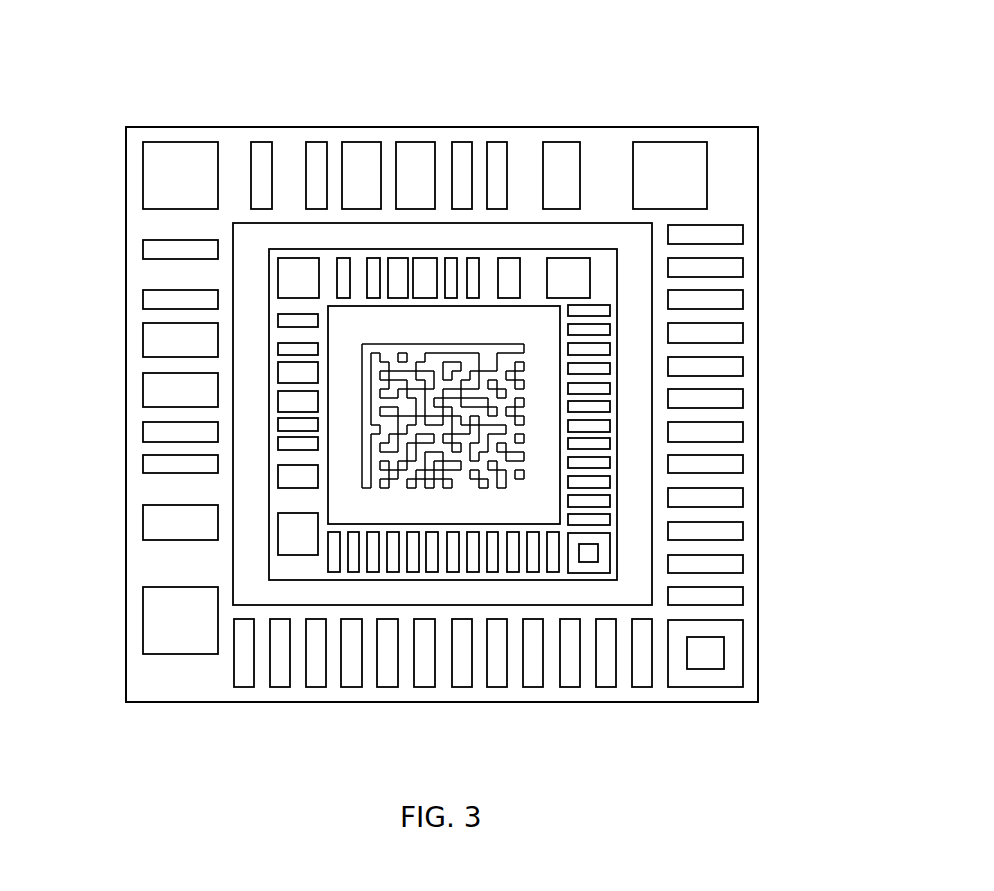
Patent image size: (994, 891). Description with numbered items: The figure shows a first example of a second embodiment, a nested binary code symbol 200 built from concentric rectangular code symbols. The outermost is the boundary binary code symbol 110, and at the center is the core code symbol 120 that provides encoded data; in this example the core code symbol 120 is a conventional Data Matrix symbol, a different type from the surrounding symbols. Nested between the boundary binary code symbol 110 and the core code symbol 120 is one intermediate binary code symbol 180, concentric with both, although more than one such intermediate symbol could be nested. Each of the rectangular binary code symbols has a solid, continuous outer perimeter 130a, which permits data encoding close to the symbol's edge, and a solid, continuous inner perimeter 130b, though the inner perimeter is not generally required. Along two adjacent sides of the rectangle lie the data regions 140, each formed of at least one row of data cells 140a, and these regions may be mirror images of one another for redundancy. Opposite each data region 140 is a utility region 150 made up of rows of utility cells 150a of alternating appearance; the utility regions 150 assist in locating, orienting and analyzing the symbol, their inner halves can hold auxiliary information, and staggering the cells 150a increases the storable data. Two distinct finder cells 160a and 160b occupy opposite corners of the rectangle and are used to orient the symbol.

The boundary binary code symbol 110 is at (705, 120).
The core code symbol 120 is at (423, 352).
The outer perimeter 130a is at (133, 606).
The inner perimeter 130b is at (502, 218).
The data region 140 is at (657, 122).
The data cell 140a is at (560, 157).
The utility region 150 is at (765, 418).
The utility cell 150a is at (730, 459).
The finder cell 160a is at (163, 162).
The finder cell 160b is at (713, 681).
The intermediate binary code symbol 180 is at (367, 577).
The nested binary code symbol 200 is at (288, 112).